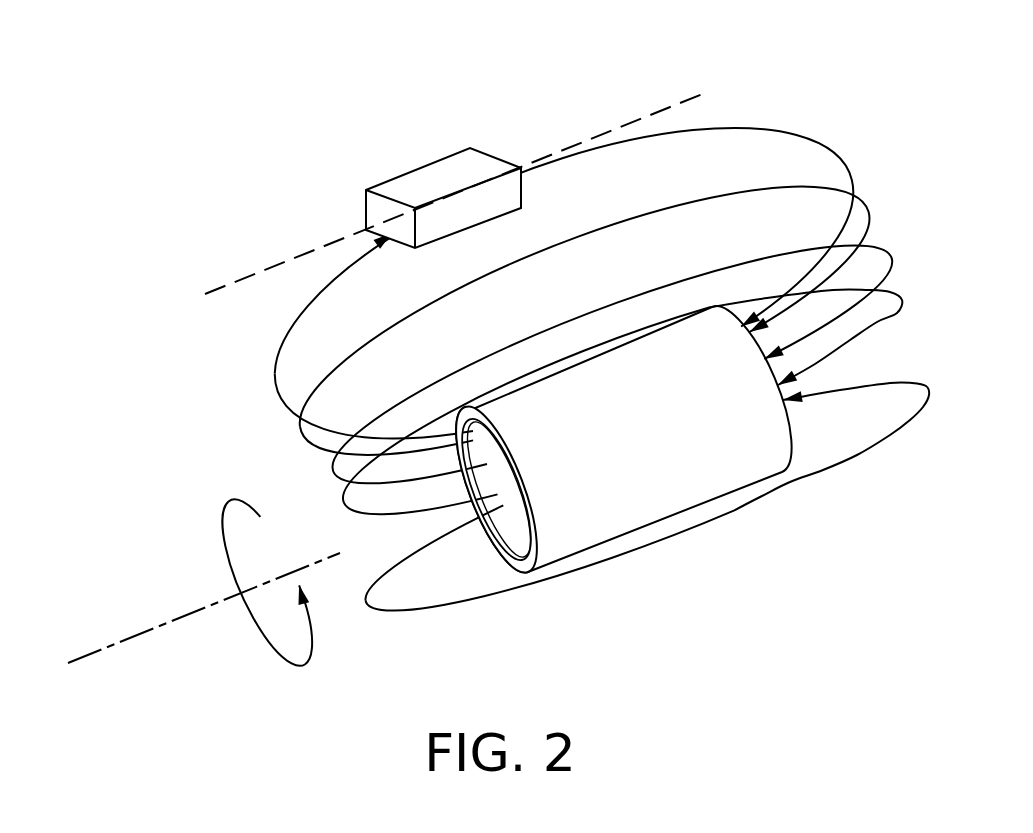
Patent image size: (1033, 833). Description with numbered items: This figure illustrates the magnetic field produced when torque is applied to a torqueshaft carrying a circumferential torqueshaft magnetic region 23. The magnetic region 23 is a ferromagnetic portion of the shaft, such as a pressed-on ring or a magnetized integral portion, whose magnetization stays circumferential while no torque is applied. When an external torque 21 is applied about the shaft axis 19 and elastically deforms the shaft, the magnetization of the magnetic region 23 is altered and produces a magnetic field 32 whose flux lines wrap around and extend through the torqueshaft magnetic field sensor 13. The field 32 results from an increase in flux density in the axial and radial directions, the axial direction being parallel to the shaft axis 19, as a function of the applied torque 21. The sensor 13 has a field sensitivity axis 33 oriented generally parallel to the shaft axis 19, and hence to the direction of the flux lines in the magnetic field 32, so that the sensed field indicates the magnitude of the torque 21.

The torqueshaft magnetic field sensor 13 is at (442, 168).
The shaft axis 19 is at (137, 633).
The torque 21 is at (223, 507).
The circumferential torqueshaft magnetic region 23 is at (772, 424).
The magnetic field 32 is at (793, 133).
The field sensitivity axis 33 is at (680, 102).